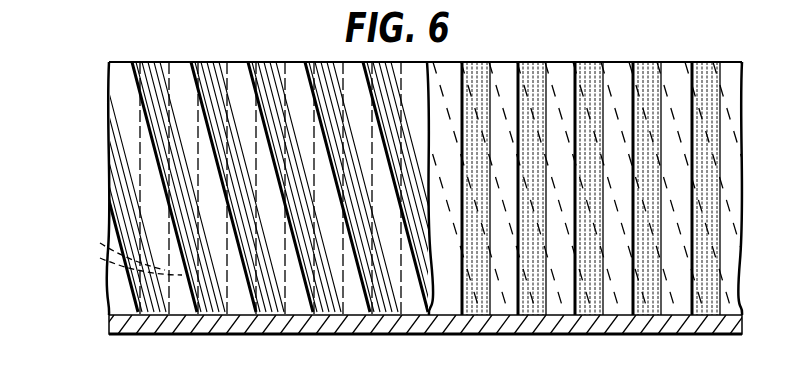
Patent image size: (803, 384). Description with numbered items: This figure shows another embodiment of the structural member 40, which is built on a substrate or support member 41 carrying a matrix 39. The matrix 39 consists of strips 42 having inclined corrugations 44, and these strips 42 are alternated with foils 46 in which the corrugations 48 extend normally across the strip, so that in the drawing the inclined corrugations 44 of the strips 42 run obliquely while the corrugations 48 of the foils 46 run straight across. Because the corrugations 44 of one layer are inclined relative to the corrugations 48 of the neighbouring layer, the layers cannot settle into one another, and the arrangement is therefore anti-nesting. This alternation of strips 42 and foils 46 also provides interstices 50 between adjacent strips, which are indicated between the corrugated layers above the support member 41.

The matrix 39 is at (196, 50).
The structural member 40 is at (100, 135).
The substrate or support member 41 is at (187, 337).
The strips 42 is at (268, 60).
The inclined corrugations 44 is at (208, 77).
The foils 46 is at (566, 62).
The corrugations 48 is at (701, 64).
The interstices 50 is at (110, 260).